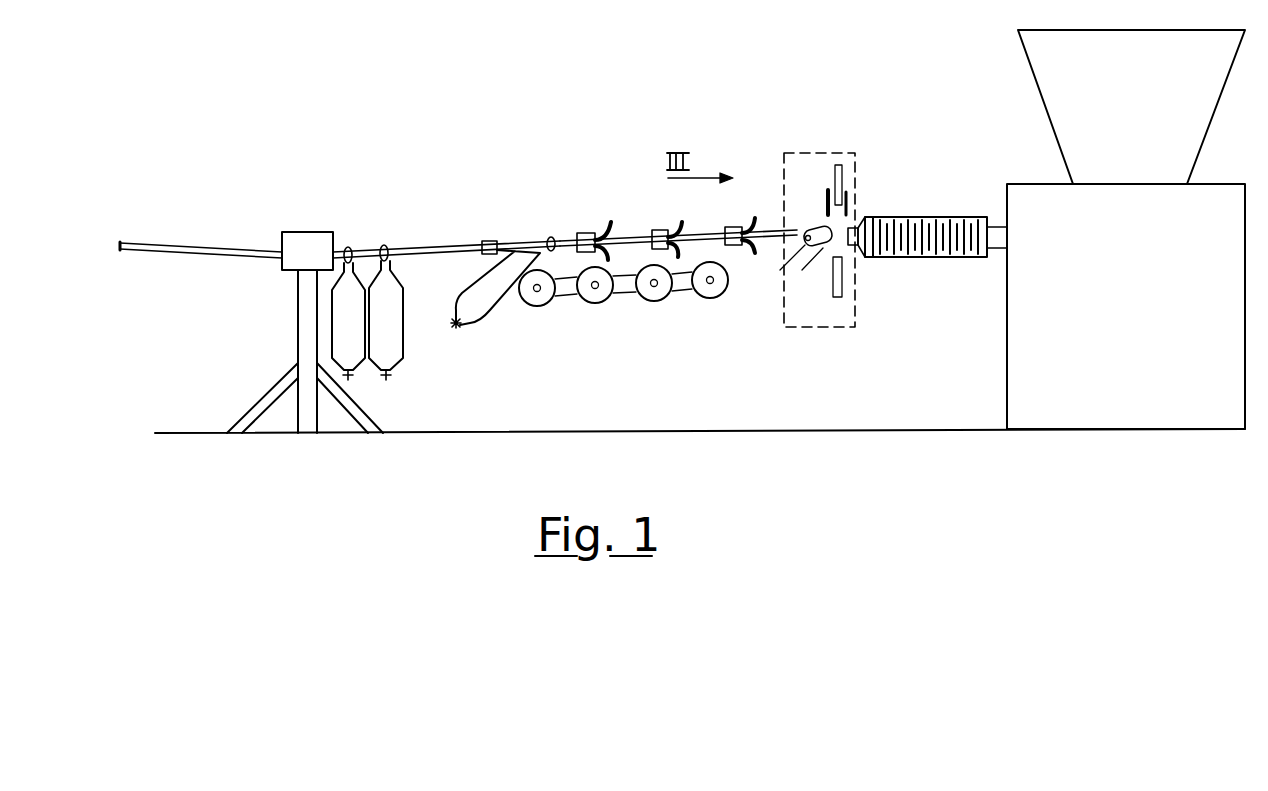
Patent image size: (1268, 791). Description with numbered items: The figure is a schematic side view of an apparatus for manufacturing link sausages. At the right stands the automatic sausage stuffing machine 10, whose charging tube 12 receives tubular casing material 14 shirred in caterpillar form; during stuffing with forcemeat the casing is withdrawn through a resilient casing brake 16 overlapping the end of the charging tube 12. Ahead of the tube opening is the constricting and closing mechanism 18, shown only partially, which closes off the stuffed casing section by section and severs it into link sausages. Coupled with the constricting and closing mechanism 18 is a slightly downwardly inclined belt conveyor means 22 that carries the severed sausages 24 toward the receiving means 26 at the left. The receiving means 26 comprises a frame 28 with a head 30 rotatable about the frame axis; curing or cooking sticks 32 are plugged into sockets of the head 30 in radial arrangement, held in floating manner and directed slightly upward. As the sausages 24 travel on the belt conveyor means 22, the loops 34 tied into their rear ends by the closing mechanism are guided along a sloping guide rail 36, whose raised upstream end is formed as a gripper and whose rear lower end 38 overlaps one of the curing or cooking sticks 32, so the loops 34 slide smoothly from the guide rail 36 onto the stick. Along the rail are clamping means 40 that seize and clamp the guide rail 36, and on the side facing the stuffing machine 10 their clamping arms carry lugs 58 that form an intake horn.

The automatic sausage stuffing machine 10 is at (1212, 197).
The charging tube 12 is at (998, 232).
The tubular casing material 14 is at (917, 256).
The casing brake 16 is at (872, 250).
The constricting and closing mechanism 18 is at (857, 183).
The belt conveyor means 22 is at (677, 296).
The sausages 24 is at (396, 347).
The receiving means 26 is at (260, 212).
The frame 28 is at (302, 335).
The head 30 is at (307, 237).
The curing or cooking sticks 32 is at (155, 248).
The loops 34 is at (349, 247).
The guide rail 36 is at (627, 238).
The rear lower end 38 is at (490, 241).
The clamping means 40 is at (584, 233).
The lugs 58 is at (672, 222).